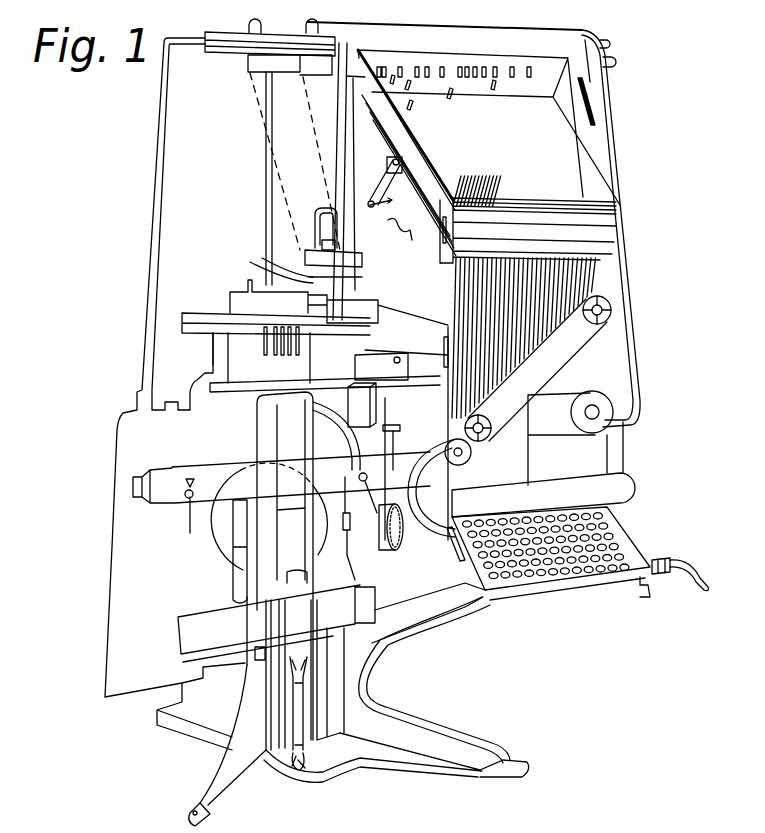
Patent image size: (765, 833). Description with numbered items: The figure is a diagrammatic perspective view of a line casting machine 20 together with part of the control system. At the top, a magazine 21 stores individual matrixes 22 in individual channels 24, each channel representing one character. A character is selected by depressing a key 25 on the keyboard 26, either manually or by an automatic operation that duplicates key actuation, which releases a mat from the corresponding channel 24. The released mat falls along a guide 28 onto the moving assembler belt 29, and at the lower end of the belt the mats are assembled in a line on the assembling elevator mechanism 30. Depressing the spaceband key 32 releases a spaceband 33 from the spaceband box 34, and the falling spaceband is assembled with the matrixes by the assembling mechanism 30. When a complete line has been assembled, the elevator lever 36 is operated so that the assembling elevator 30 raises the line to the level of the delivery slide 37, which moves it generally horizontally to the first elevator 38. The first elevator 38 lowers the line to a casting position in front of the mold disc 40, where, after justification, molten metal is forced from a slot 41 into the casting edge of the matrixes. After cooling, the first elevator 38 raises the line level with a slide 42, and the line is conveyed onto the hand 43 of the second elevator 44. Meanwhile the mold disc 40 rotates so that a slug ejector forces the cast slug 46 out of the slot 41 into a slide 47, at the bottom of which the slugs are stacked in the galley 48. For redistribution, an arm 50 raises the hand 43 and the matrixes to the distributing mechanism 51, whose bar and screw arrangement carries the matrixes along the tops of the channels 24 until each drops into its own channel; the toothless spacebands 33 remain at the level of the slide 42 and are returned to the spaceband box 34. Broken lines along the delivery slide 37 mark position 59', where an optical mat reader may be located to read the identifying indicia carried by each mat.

The line casting machine 20 is at (524, 634).
The magazine 21 is at (600, 250).
The matrixes 22 is at (410, 100).
The channels 24 is at (487, 190).
The keys 25 is at (623, 542).
The keyboard 26 is at (567, 567).
The guide 28 is at (472, 303).
The assembler belt 29 is at (585, 342).
The assembling elevator mechanism 30 is at (415, 452).
The spaceband key 32 is at (452, 545).
The spaceband 33 is at (446, 357).
The spaceband box 34 is at (440, 346).
The elevator lever 36 is at (703, 590).
The delivery slide 37 is at (336, 436).
The first elevator 38 is at (298, 432).
The mold disc 40 is at (223, 540).
The slot 41 is at (279, 481).
The slide 42 is at (225, 323).
The hand 43 is at (305, 252).
The second elevator 44 is at (330, 207).
The cast slug 46 is at (300, 300).
The slide 47 is at (363, 547).
The galley 48 is at (292, 629).
The arm 50 is at (265, 176).
The distributing mechanism 51 is at (322, 44).
The optical mat reader position 59' is at (387, 461).